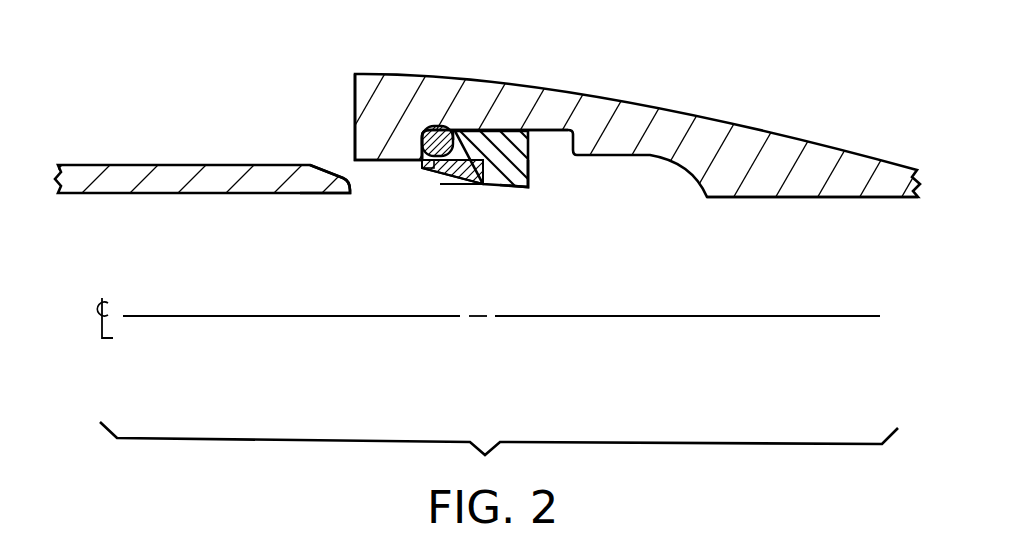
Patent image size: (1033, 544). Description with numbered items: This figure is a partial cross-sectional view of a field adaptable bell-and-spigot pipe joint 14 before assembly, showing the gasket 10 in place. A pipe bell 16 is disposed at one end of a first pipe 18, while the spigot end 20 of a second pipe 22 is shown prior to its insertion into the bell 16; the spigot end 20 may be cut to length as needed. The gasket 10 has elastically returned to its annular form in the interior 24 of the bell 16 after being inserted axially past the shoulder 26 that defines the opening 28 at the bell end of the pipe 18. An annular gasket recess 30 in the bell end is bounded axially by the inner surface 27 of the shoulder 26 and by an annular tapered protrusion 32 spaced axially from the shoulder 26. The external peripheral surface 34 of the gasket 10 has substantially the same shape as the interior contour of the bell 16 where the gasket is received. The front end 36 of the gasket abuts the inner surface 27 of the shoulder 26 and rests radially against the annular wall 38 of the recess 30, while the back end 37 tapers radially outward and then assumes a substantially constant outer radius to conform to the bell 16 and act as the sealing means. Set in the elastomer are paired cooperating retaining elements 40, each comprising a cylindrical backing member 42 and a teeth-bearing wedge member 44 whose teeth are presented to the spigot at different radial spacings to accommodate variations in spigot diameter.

The gasket 10 is at (542, 233).
The pipe joint 14 is at (325, 64).
The pipe bell 16 is at (565, 85).
The first pipe 18 is at (848, 157).
The spigot end 20 is at (318, 195).
The second pipe 22 is at (120, 165).
The interior 24 is at (652, 257).
The shoulder 26 is at (355, 102).
The inner surface 27 is at (424, 170).
The opening 28 is at (413, 281).
The annular gasket recess 30 is at (455, 140).
The annular tapered protrusion 32 is at (478, 130).
The external peripheral surface 34 is at (525, 131).
The front end 36 is at (436, 170).
The back end 37 is at (537, 182).
The annular wall 38 is at (433, 126).
The paired cooperating retaining elements 40 is at (451, 200).
The backing member 42 is at (426, 126).
The wedge member 44 is at (468, 176).